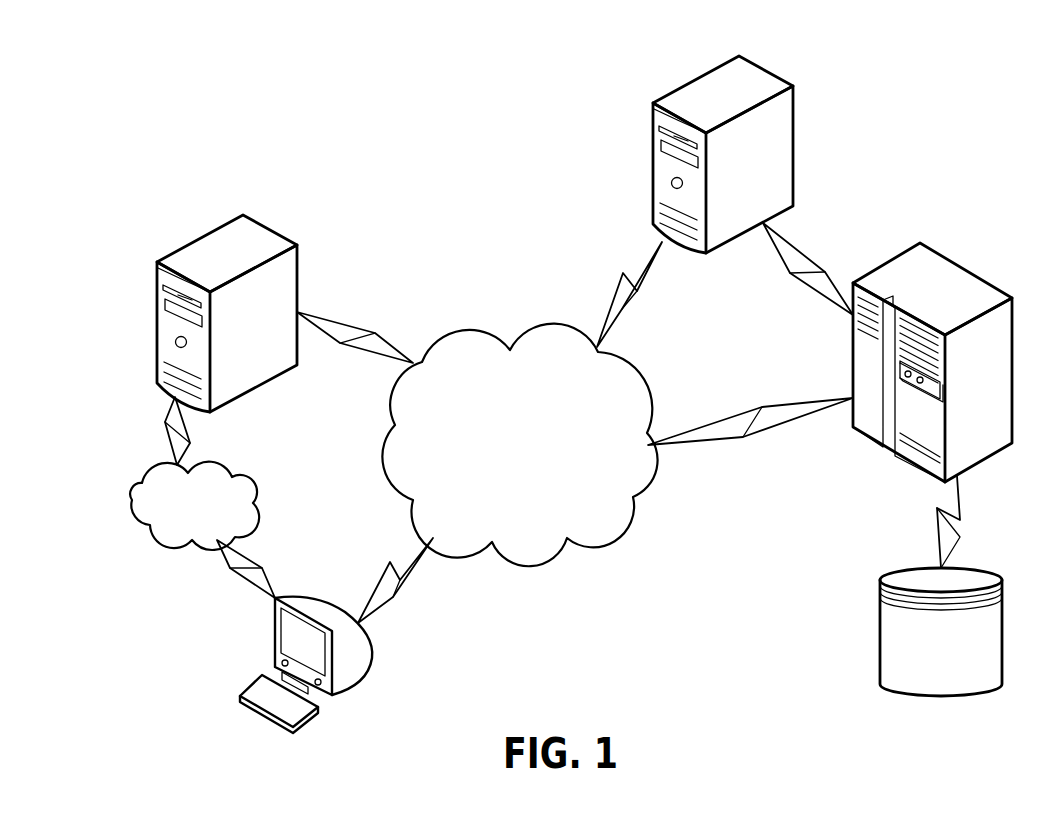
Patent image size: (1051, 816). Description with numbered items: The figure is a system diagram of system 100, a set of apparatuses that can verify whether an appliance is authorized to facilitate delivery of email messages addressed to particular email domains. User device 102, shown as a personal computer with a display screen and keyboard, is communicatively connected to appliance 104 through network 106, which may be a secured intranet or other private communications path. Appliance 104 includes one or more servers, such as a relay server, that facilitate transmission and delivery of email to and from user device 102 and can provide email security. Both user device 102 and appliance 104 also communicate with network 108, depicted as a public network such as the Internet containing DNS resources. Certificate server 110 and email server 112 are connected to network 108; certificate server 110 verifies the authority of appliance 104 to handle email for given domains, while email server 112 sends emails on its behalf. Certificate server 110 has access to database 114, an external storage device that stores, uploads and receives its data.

The system 100 is at (541, 42).
The user device 102 is at (287, 665).
The appliance 104 is at (189, 313).
The network 106 is at (161, 504).
The network 108 is at (519, 434).
The certificate server 110 is at (949, 362).
The email server 112 is at (749, 149).
The database 114 is at (907, 623).